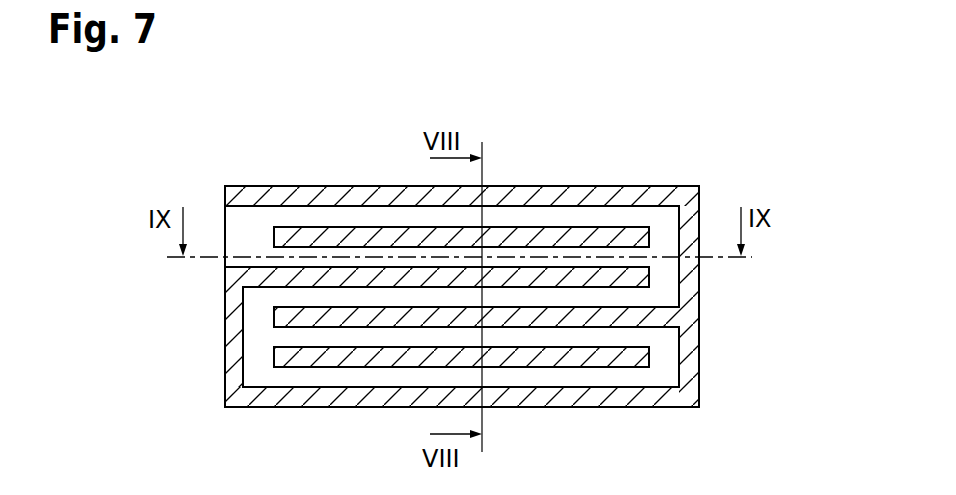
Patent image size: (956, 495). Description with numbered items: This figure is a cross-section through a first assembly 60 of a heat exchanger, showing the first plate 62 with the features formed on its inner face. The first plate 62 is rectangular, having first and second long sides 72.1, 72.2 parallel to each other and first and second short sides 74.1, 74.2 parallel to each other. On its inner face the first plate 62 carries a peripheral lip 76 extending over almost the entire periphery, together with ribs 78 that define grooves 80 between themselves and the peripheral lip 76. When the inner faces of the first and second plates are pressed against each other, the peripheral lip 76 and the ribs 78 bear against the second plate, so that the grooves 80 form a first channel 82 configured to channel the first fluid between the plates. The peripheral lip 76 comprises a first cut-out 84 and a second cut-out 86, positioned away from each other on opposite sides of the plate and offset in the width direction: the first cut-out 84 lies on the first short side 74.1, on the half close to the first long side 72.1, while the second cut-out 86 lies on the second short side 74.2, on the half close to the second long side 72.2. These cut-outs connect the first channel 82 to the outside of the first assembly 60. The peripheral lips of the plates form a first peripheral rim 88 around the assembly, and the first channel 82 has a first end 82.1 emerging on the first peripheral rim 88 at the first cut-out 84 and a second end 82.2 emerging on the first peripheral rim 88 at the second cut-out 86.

The first assembly 60 is at (210, 173).
The first plate 62 is at (617, 180).
The first long side 72.1 is at (577, 408).
The second long side 72.2 is at (527, 186).
The first short side 74.1 is at (700, 310).
The second short side 74.2 is at (225, 337).
The peripheral lip 76 is at (293, 395).
The rib 78 is at (385, 353).
The groove 80 is at (447, 377).
The first channel 82 is at (512, 373).
The first end 82.1 is at (700, 350).
The second end 82.2 is at (226, 232).
The first cut-out 84 is at (675, 376).
The second cut-out 86 is at (223, 214).
The first peripheral rim 88 is at (652, 408).